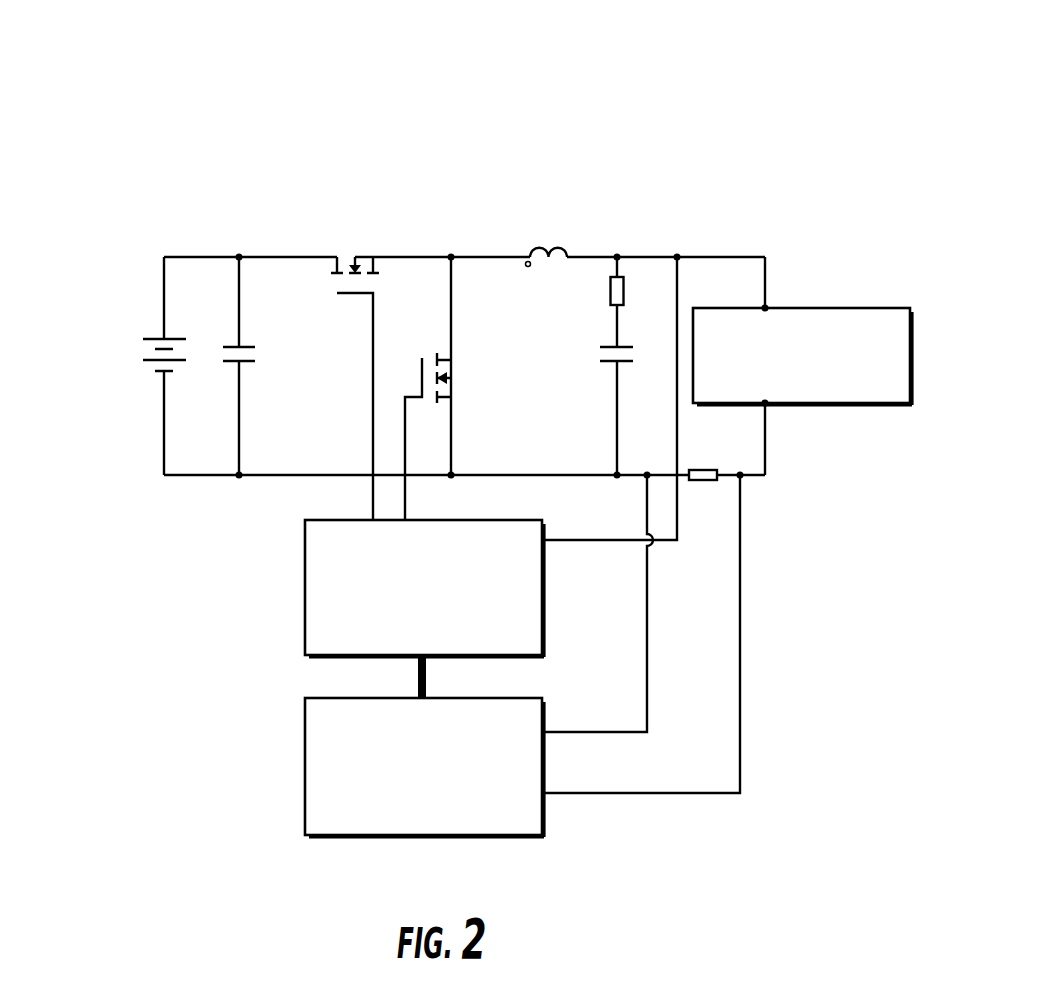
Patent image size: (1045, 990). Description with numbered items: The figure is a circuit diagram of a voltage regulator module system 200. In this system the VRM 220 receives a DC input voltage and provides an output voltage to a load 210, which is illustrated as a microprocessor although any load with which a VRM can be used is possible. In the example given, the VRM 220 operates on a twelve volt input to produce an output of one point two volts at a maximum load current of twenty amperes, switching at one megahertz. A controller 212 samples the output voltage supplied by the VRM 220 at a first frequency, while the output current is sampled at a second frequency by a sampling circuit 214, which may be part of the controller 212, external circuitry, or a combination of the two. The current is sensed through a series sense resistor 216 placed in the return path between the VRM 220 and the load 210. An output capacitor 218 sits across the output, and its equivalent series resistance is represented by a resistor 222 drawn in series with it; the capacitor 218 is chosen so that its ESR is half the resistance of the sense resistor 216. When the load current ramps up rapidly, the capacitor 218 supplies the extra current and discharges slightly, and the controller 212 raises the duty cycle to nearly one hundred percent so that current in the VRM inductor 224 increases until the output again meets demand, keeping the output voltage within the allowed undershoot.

The VRM system 200 is at (150, 81).
The load 210 is at (842, 308).
The controller 212 is at (305, 614).
The sampling circuit 214 is at (335, 835).
The sense resistor 216 is at (708, 463).
The output capacitor 218 is at (630, 342).
The VRM 220 is at (469, 215).
The resistor 222 is at (608, 292).
The VRM inductor 224 is at (539, 236).